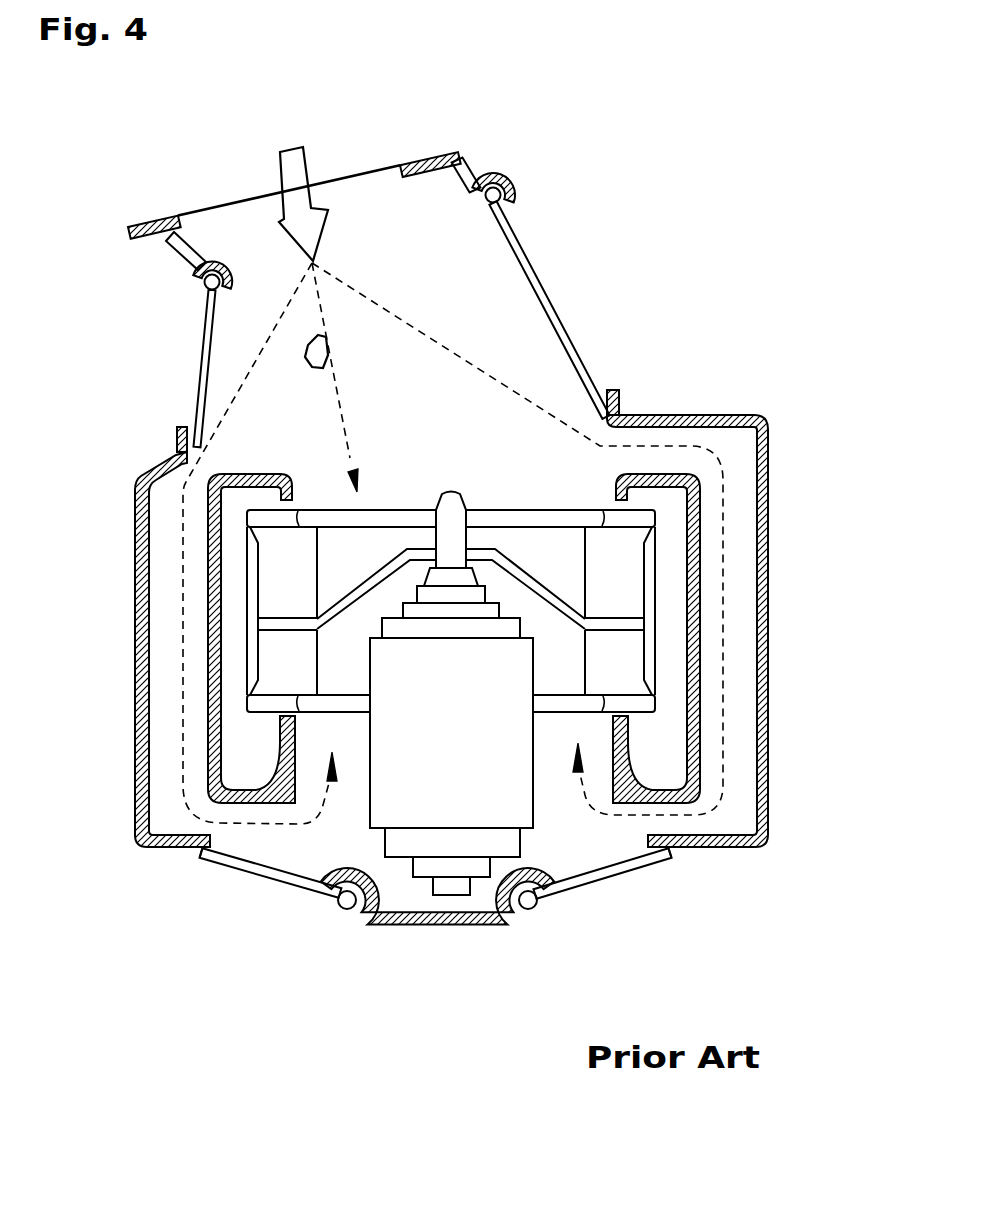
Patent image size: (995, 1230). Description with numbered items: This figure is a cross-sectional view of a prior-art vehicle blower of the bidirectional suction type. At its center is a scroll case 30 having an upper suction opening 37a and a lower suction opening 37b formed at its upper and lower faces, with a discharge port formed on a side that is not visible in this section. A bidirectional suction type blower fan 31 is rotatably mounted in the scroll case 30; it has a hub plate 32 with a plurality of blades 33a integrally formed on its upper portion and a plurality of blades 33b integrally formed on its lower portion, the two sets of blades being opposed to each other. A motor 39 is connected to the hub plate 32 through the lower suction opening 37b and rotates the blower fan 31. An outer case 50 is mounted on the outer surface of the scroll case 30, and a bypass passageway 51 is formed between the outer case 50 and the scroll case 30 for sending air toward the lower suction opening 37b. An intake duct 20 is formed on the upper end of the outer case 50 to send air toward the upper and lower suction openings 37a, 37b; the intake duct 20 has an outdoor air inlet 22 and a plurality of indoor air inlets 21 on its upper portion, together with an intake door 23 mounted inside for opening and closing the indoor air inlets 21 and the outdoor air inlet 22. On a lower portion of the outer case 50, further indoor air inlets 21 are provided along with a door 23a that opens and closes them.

The intake duct 20 is at (537, 179).
The indoor air inlets 21 is at (560, 302).
The outdoor air inlet 22 is at (220, 213).
The intake door 23 is at (587, 367).
The door 23a is at (222, 862).
The scroll case 30 is at (691, 521).
The bidirectional suction type blower fan 31 is at (468, 486).
The hub plate 32 is at (378, 556).
The blades 33a is at (622, 573).
The blades 33b is at (627, 657).
The upper suction opening 37a is at (300, 472).
The lower suction opening 37b is at (303, 792).
The motor 39 is at (458, 820).
The outer case 50 is at (766, 780).
The bypass passageway 51 is at (163, 658).